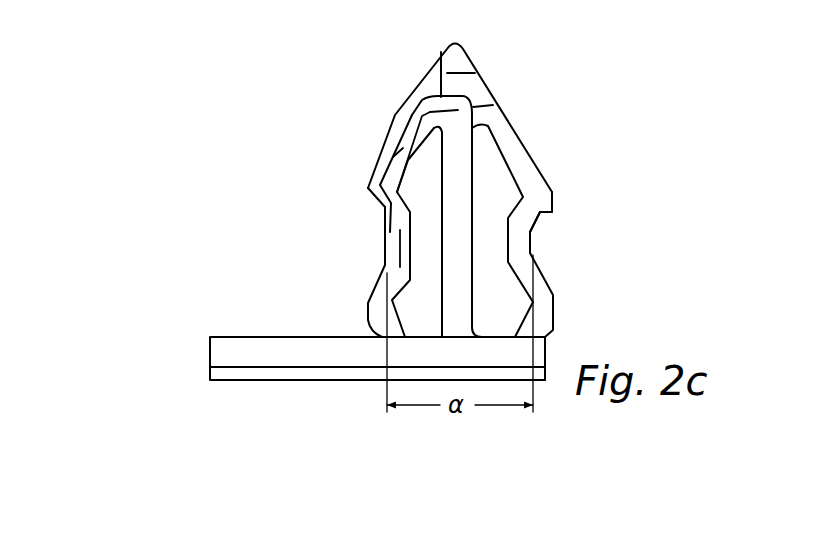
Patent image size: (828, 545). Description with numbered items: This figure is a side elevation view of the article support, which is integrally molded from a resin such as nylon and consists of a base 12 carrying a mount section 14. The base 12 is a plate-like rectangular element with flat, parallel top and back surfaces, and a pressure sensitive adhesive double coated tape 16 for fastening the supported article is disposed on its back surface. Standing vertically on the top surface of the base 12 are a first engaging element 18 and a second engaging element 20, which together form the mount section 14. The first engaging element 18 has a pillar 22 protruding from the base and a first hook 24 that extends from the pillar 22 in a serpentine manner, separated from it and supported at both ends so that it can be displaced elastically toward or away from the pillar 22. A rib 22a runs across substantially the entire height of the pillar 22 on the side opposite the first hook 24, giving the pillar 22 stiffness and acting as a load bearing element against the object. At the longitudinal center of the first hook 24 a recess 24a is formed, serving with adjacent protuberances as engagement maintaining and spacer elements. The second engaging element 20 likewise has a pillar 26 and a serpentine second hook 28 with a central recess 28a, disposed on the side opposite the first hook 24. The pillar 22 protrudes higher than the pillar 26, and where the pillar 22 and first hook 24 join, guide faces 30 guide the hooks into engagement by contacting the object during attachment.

The base 12 is at (208, 352).
The mount section 14 is at (375, 80).
The pressure sensitive adhesive double coated tape 16 is at (218, 378).
The first engaging element 18 is at (490, 72).
The second engaging element 20 is at (477, 157).
The pillar 22 is at (388, 128).
The rib 22a is at (386, 248).
The first hook 24 is at (530, 170).
The recess 24a is at (532, 243).
The pillar 26 is at (462, 302).
The second hook 28 is at (369, 195).
The recess 28a is at (383, 232).
The guide faces 30 is at (422, 80).